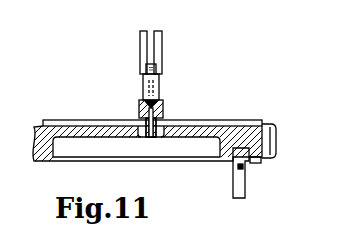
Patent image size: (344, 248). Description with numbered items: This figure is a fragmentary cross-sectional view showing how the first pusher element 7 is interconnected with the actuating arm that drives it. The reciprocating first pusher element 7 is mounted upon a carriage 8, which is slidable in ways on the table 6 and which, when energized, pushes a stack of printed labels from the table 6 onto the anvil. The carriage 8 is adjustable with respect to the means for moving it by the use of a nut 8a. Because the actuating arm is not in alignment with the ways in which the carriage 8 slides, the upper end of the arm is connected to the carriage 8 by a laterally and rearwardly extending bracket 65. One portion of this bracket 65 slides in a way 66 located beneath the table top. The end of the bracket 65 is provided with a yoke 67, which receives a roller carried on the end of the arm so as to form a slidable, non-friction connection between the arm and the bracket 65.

The table 6 is at (91, 120).
The first pusher element 7 is at (163, 43).
The carriage 8 is at (164, 113).
The nut 8a is at (160, 92).
The bracket 65 is at (185, 162).
The way 66 is at (262, 125).
The yoke 67 is at (245, 185).